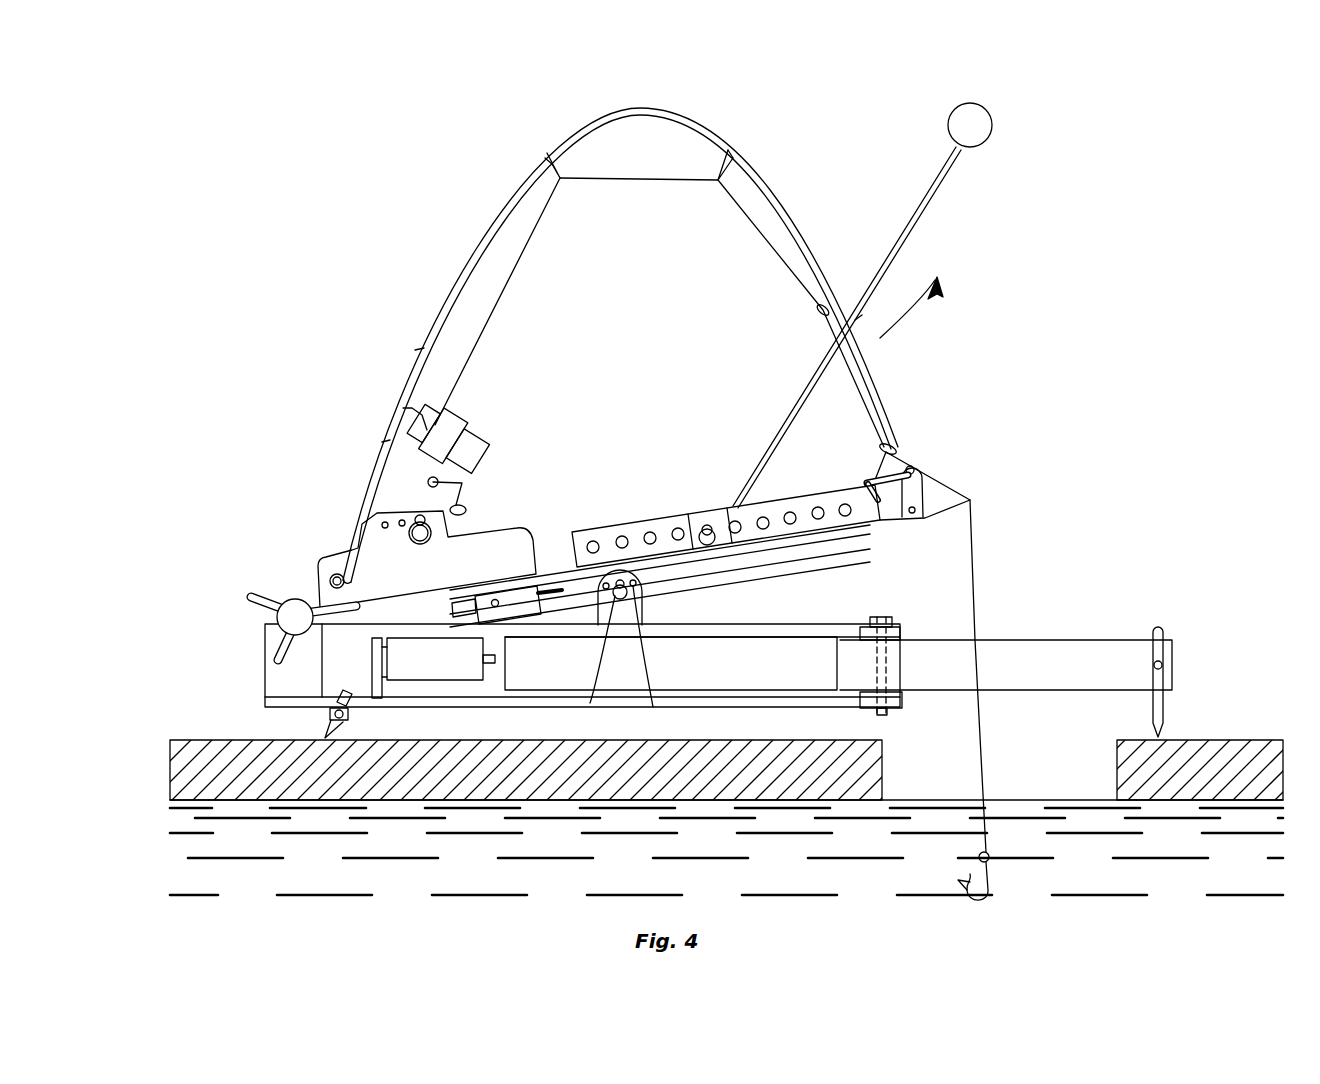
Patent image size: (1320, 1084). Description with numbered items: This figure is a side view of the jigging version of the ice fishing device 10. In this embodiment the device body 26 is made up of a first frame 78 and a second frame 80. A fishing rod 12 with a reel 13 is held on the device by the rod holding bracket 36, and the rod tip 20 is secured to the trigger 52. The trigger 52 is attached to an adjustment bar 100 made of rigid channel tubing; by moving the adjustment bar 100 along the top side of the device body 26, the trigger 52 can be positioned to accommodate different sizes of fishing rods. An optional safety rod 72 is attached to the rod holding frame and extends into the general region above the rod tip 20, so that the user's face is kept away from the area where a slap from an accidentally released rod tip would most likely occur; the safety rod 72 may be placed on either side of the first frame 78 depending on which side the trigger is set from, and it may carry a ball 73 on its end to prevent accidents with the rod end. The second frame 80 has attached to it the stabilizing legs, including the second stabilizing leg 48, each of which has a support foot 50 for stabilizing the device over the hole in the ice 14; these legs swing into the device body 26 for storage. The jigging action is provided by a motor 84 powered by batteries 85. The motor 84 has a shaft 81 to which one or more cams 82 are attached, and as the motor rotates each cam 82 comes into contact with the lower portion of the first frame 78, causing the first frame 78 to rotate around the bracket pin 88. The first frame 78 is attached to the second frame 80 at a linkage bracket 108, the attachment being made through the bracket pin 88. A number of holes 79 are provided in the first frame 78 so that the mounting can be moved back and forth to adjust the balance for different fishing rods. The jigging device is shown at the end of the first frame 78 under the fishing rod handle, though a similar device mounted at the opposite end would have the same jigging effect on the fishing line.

The ice fishing device 10 is at (300, 306).
The fishing rod 12 is at (462, 252).
The reel 13 is at (458, 488).
The hole in the ice 14 is at (1043, 740).
The rod tip 20 is at (903, 447).
The device body 26 is at (443, 703).
The rod holding bracket 36 is at (357, 516).
The second stabilizing leg 48 is at (1003, 640).
The support foot 50 is at (1158, 622).
The trigger 52 is at (972, 458).
The safety rod 72 is at (907, 222).
The ball 73 is at (992, 126).
The first frame 78 is at (550, 570).
The holes 79 is at (606, 588).
The second frame 80 is at (762, 703).
The shaft 81 is at (288, 628).
The cam 82 is at (250, 602).
The motor 84 is at (292, 599).
The batteries 85 is at (418, 658).
The bracket pin 88 is at (618, 585).
The adjustment bar 100 is at (675, 523).
The linkage bracket 108 is at (633, 618).